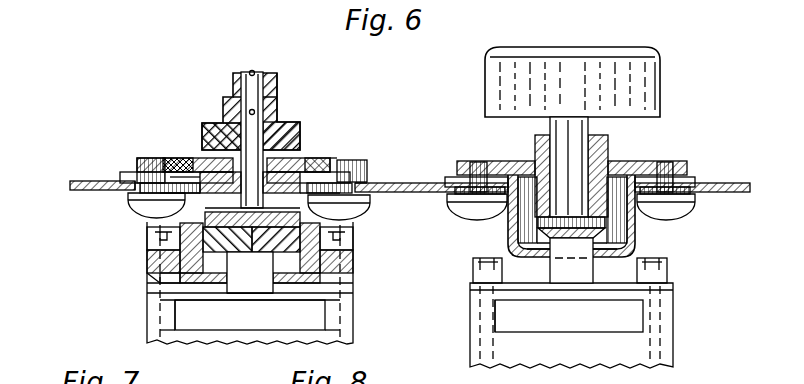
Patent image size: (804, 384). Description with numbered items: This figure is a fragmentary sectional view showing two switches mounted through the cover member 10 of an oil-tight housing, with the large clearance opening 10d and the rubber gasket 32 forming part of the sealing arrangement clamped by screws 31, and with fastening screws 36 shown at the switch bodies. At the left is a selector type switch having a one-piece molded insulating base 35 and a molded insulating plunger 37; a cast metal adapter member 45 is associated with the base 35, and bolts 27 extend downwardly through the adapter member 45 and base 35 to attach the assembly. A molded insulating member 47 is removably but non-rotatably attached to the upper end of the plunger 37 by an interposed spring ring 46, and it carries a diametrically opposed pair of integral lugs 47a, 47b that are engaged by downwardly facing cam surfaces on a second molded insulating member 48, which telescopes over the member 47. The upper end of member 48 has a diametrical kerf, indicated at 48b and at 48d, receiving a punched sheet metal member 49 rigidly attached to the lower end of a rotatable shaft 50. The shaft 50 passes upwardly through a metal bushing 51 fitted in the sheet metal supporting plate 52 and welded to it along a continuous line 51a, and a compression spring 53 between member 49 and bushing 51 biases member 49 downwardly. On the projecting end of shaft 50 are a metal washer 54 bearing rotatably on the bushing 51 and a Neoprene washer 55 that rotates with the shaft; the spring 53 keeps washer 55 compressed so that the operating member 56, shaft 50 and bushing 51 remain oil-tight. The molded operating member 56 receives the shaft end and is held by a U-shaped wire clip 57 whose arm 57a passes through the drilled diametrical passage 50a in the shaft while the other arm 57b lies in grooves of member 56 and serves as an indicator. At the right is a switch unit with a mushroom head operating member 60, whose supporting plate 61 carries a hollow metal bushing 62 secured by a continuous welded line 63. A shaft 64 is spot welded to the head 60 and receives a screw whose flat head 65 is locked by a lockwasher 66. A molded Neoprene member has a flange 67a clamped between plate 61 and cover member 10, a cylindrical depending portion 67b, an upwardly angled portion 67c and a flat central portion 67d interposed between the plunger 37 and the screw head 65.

The cover member 10 is at (72, 186).
The opening 10d is at (192, 160).
The bolts 27 is at (155, 258).
The screws 31 is at (455, 184).
The gasket 32 is at (134, 184).
The insulating base 35 is at (355, 306).
The screw 36 is at (470, 272).
The insulating plunger 37 is at (258, 270).
The adapter member 45 is at (346, 240).
The spring ring 46 is at (240, 262).
The molded insulating member 47 is at (153, 232).
The lug 47a is at (150, 274).
The lug 47b is at (346, 266).
The molded insulating member 48 is at (355, 220).
The slot 48b is at (362, 176).
The bushing flange 48d is at (140, 178).
The punched sheet metal member 49 is at (336, 165).
The rotatable shaft 50 is at (263, 120).
The diametrical passage 50a is at (249, 111).
The bushing 51 is at (215, 158).
The welded line 51a is at (303, 158).
The supporting plate 52 is at (370, 186).
The compression spring 53 is at (195, 160).
The washer 54 is at (226, 118).
The gasket washer 55 is at (292, 150).
The operating member 56 is at (272, 80).
The nut 57 is at (232, 105).
The arm portion 57a is at (185, 77).
The arm portion 57b is at (251, 74).
The mushroom head operating member 60 is at (525, 72).
The supporting plate 61 is at (642, 170).
The hollow metal bushing 62 is at (612, 135).
The welded line 63 is at (612, 160).
The shaft 64 is at (567, 140).
The screw head 65 is at (640, 240).
The lockwasher 66 is at (543, 170).
The flange 67a is at (690, 186).
The cylindrical depending portion 67b is at (632, 232).
The upwardly angled portion 67c is at (548, 265).
The flat portion 67d is at (636, 254).